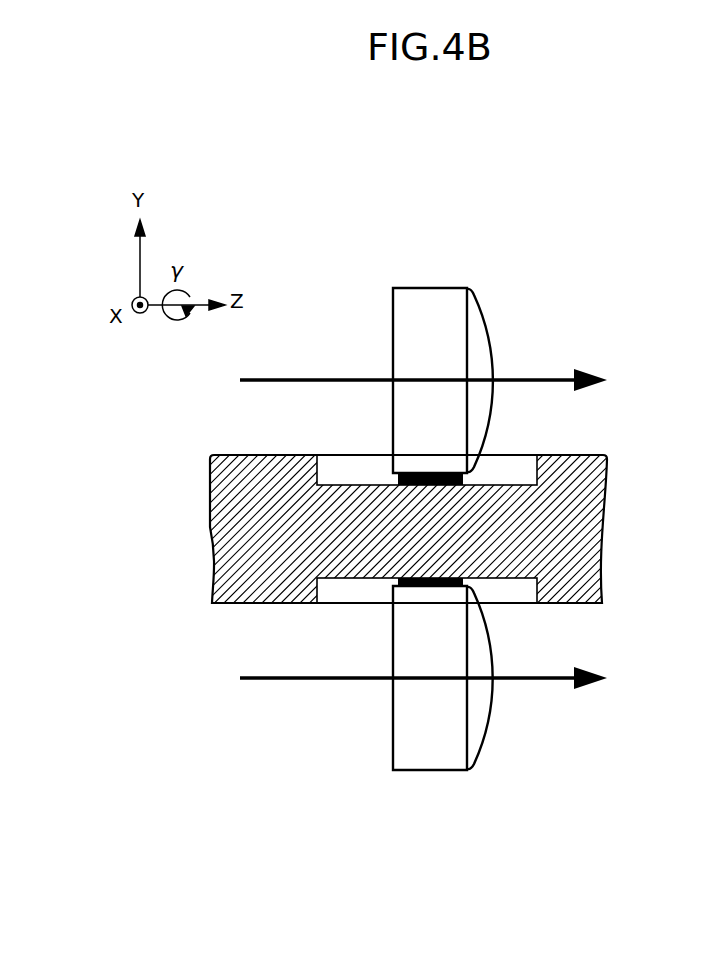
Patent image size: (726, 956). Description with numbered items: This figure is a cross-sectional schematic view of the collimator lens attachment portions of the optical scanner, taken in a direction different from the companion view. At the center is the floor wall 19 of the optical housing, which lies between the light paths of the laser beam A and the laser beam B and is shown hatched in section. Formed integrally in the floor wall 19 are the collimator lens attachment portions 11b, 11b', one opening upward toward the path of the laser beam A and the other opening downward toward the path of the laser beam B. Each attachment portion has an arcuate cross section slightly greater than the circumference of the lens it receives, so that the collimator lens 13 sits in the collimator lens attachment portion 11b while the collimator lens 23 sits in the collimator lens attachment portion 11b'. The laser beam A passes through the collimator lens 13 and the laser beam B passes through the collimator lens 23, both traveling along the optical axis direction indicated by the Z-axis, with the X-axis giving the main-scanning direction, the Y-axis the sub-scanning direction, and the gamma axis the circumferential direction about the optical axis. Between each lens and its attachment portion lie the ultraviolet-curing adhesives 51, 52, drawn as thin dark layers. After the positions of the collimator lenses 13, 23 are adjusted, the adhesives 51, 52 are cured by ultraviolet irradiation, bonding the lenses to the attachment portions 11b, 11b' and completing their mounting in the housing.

The collimator lens 13 is at (419, 277).
The collimator lens 23 is at (420, 780).
The collimator lens attachment portion 11b is at (449, 370).
The collimator lens attachment portion 11b' is at (466, 699).
The floor wall 19 is at (272, 510).
The ultraviolet-curing adhesive 51 is at (430, 485).
The ultraviolet-curing adhesive 52 is at (437, 578).
The laser beam A is at (545, 366).
The laser beam B is at (544, 693).